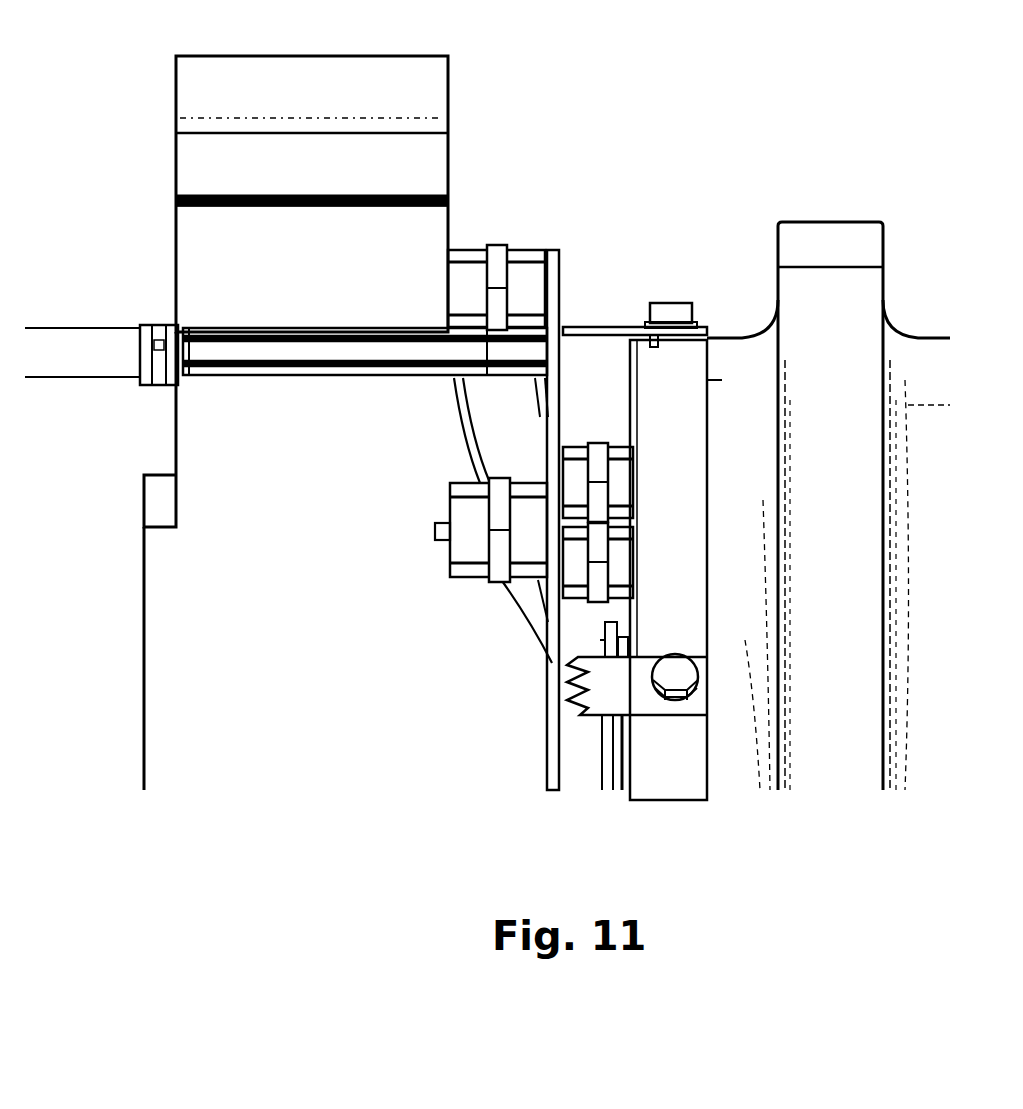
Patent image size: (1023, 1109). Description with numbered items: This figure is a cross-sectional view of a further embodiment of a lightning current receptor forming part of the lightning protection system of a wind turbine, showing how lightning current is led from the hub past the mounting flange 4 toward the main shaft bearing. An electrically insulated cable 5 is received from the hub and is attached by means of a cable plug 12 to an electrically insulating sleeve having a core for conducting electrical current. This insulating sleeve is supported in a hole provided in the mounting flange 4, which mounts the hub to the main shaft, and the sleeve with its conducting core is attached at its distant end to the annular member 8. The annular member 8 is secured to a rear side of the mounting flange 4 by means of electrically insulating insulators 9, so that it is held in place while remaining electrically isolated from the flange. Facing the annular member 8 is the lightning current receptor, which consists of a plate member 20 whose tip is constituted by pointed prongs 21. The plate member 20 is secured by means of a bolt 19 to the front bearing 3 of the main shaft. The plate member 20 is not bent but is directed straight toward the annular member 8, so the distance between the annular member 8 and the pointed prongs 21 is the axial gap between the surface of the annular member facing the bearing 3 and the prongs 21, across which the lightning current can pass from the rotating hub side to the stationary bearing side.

The front bearing 3 is at (925, 745).
The mounting flange 4 is at (438, 170).
The electrical conductor cable 5 is at (52, 345).
The annular member 8 is at (548, 740).
The electrically insulating insulators 9 is at (518, 246).
The cable plug 12 is at (140, 325).
The bolt 19 is at (665, 312).
The plate member 20 is at (595, 327).
The pointed prongs 21 is at (582, 720).